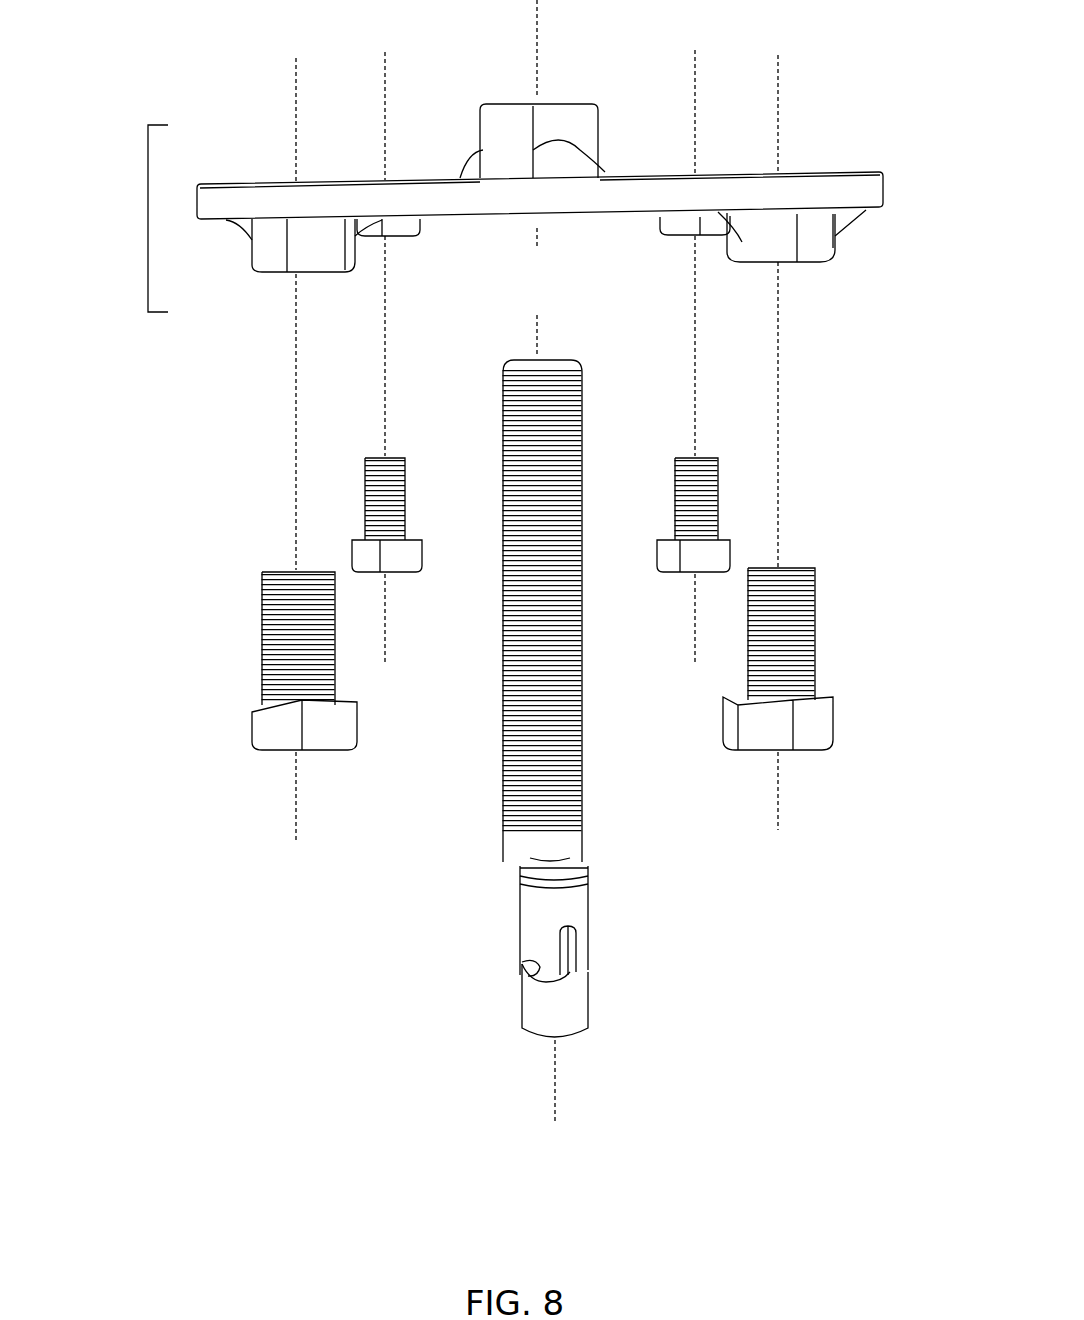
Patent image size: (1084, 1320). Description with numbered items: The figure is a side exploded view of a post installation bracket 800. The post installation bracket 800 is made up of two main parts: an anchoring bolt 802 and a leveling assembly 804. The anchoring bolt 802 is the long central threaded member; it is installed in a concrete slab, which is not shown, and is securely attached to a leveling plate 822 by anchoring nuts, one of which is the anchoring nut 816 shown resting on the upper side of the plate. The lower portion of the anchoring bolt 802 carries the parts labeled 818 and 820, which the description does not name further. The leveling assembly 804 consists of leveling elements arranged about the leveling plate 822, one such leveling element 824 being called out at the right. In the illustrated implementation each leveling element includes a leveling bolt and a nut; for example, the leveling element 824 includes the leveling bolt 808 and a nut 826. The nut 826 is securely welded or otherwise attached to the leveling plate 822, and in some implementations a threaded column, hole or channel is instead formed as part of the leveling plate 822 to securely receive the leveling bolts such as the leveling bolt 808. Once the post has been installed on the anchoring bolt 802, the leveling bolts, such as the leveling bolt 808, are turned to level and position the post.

The post installation bracket 800 is at (776, 1208).
The anchoring bolt 802 is at (498, 420).
The leveling assembly 804 is at (148, 224).
The leveling bolt 808 is at (812, 568).
The anchoring nut 816 is at (480, 150).
The sleeve 818 is at (590, 927).
The expansion clip 820 is at (590, 1014).
The leveling plate 822 is at (840, 170).
The leveling element 824 is at (825, 120).
The nut 826 is at (833, 256).